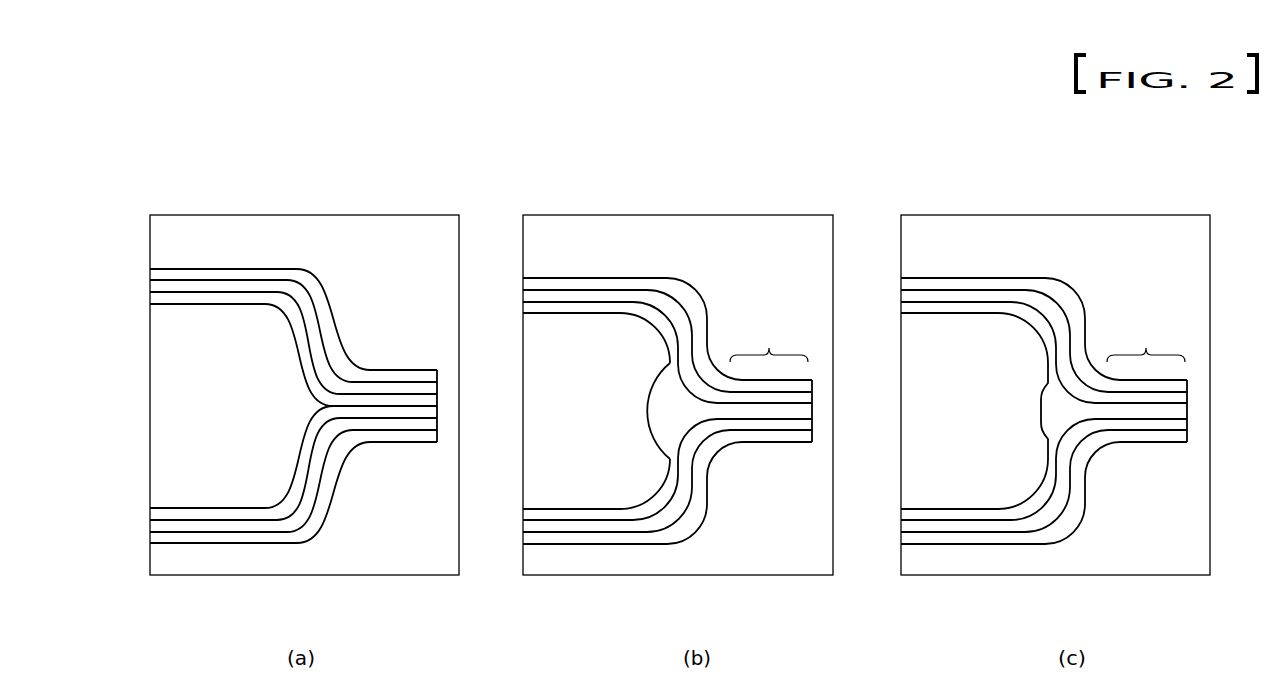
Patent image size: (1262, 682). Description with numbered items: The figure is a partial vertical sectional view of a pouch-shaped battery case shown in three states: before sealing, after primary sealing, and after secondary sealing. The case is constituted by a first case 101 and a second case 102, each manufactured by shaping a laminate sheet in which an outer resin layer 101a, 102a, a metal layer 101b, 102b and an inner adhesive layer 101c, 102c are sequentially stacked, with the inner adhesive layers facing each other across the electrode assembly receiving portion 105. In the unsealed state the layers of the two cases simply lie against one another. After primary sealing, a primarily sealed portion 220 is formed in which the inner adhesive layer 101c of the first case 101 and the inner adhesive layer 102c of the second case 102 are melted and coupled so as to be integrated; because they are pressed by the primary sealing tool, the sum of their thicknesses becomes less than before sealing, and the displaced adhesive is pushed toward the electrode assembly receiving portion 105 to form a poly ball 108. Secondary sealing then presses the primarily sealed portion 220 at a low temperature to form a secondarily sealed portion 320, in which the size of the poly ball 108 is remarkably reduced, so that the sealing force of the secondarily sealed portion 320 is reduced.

The first case 101 is at (675, 522).
The outer resin layer 101a is at (321, 506).
The metal layer 101b is at (340, 426).
The inner adhesive layer 101c is at (367, 420).
The second case 102 is at (666, 307).
The outer resin layer 102a is at (302, 279).
The metal layer 102b is at (265, 284).
The inner adhesive layer 102c is at (225, 296).
The electrode assembly receiving portion 105 is at (176, 456).
The poly ball 108 is at (648, 411).
The primarily sealed portion 220 is at (771, 379).
The secondarily sealed portion 320 is at (1147, 381).